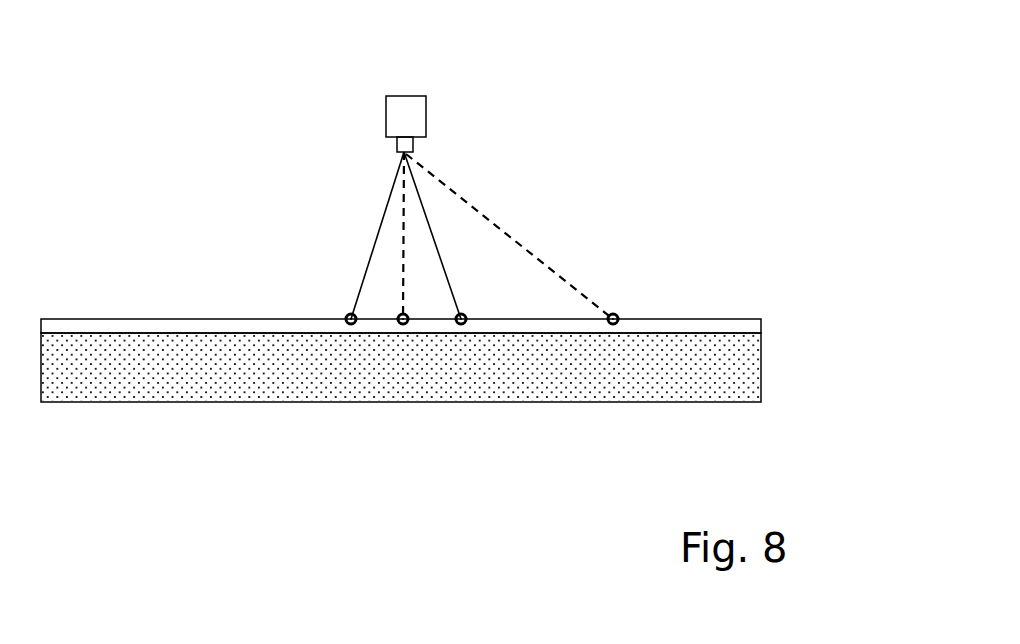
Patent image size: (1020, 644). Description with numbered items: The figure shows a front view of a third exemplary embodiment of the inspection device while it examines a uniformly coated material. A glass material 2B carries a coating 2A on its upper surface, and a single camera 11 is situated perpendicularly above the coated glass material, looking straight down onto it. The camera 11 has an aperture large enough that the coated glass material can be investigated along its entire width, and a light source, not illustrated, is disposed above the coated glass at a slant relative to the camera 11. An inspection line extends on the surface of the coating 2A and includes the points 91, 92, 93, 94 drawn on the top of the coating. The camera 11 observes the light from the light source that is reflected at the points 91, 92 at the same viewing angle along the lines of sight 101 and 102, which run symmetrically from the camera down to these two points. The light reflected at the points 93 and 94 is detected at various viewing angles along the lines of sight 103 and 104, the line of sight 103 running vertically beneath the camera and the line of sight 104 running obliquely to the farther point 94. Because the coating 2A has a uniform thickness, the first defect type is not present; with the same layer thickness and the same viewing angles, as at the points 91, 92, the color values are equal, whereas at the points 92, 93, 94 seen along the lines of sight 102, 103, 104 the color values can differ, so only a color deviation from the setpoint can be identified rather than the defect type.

The camera 11 is at (418, 100).
The coating 2A is at (709, 325).
The glass material 2B is at (66, 382).
The point of the inspection line 91 is at (349, 325).
The point of the inspection line 92 is at (459, 325).
The point of the inspection line 93 is at (401, 325).
The point of the inspection line 94 is at (611, 325).
The line of sight 101 is at (358, 293).
The line of sight 102 is at (450, 283).
The line of sight 103 is at (403, 276).
The line of sight 104 is at (560, 250).